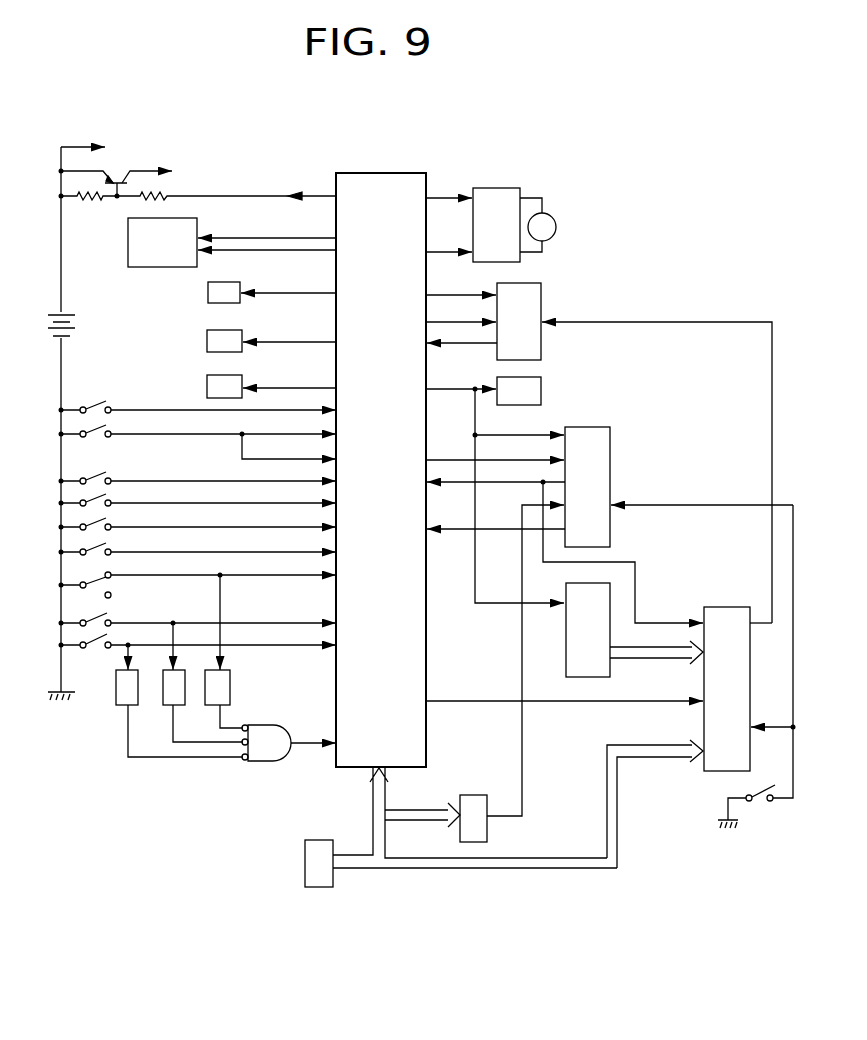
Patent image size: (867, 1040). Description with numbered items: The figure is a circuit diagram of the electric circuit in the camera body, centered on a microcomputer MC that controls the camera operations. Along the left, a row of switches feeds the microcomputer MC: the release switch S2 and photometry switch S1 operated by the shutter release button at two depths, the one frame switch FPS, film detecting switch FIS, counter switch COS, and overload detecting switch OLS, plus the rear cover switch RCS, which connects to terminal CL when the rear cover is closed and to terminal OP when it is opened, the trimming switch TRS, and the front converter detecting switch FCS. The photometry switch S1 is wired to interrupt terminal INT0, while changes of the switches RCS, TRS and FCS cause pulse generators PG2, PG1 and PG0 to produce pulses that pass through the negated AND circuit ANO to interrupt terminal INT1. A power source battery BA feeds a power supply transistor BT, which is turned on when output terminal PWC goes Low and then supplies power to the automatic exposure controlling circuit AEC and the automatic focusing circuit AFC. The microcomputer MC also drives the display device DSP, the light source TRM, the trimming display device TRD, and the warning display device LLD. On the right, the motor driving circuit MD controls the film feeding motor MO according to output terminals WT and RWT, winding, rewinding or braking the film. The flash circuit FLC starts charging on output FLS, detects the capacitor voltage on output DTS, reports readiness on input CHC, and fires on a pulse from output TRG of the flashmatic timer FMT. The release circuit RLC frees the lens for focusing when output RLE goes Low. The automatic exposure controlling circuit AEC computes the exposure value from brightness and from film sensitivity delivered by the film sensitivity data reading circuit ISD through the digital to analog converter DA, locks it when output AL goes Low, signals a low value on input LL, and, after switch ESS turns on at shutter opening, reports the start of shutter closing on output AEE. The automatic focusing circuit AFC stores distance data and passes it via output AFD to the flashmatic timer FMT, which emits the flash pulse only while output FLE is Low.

The microcomputer MC is at (397, 181).
The motor driving circuit MD is at (500, 189).
The film feeding motor MO is at (556, 222).
The power supply transistor BT is at (118, 182).
The power source battery BA is at (80, 322).
The display device DSP is at (152, 262).
The light source TRM is at (232, 283).
The display device TRD is at (228, 333).
The display device LLD is at (228, 378).
The release switch S2 is at (198, 399).
The photometry switch S1 is at (198, 434).
The one frame switch FPS is at (198, 469).
The film detecting switch FIS is at (198, 492).
The counter switch COS is at (198, 516).
The overload detecting switch OLS is at (198, 541).
The terminal CL is at (198, 609).
The rear cover switch RCS is at (113, 590).
The terminal OP is at (126, 602).
The trimming switch TRS is at (112, 613).
The front converter detecting switch FCS is at (96, 650).
The pulse generator PG0 is at (118, 700).
The pulse generator PG1 is at (165, 700).
The pulse generator PG2 is at (222, 686).
The negated AND circuit ANO is at (265, 752).
The film sensitivity data reading circuit ISD is at (305, 870).
The flash circuit FLC is at (542, 297).
The release circuit RLC is at (542, 385).
The automatic exposure controlling circuit AEC is at (595, 428).
The automatic focusing circuit AFC is at (588, 630).
The flashmatic timer FMT is at (727, 612).
The digital to analog converter DA is at (478, 830).
The switch ESS is at (760, 802).
The output terminal PWC is at (198, 185).
The output terminal WT is at (449, 185).
The output terminal RWT is at (451, 239).
The output terminal FLS is at (461, 282).
The output terminal DTS is at (461, 309).
The input terminal CHC is at (462, 333).
The output terminal TRG is at (657, 460).
The output terminal RLE is at (495, 483).
The output terminal AL is at (495, 447).
The output terminal AEE is at (565, 540).
The input terminal LL is at (496, 516).
The output terminal FLE is at (564, 688).
The output terminal AFD is at (656, 663).
The interrupt terminal INT0 is at (390, 445).
The interrupt terminal INT1 is at (390, 727).